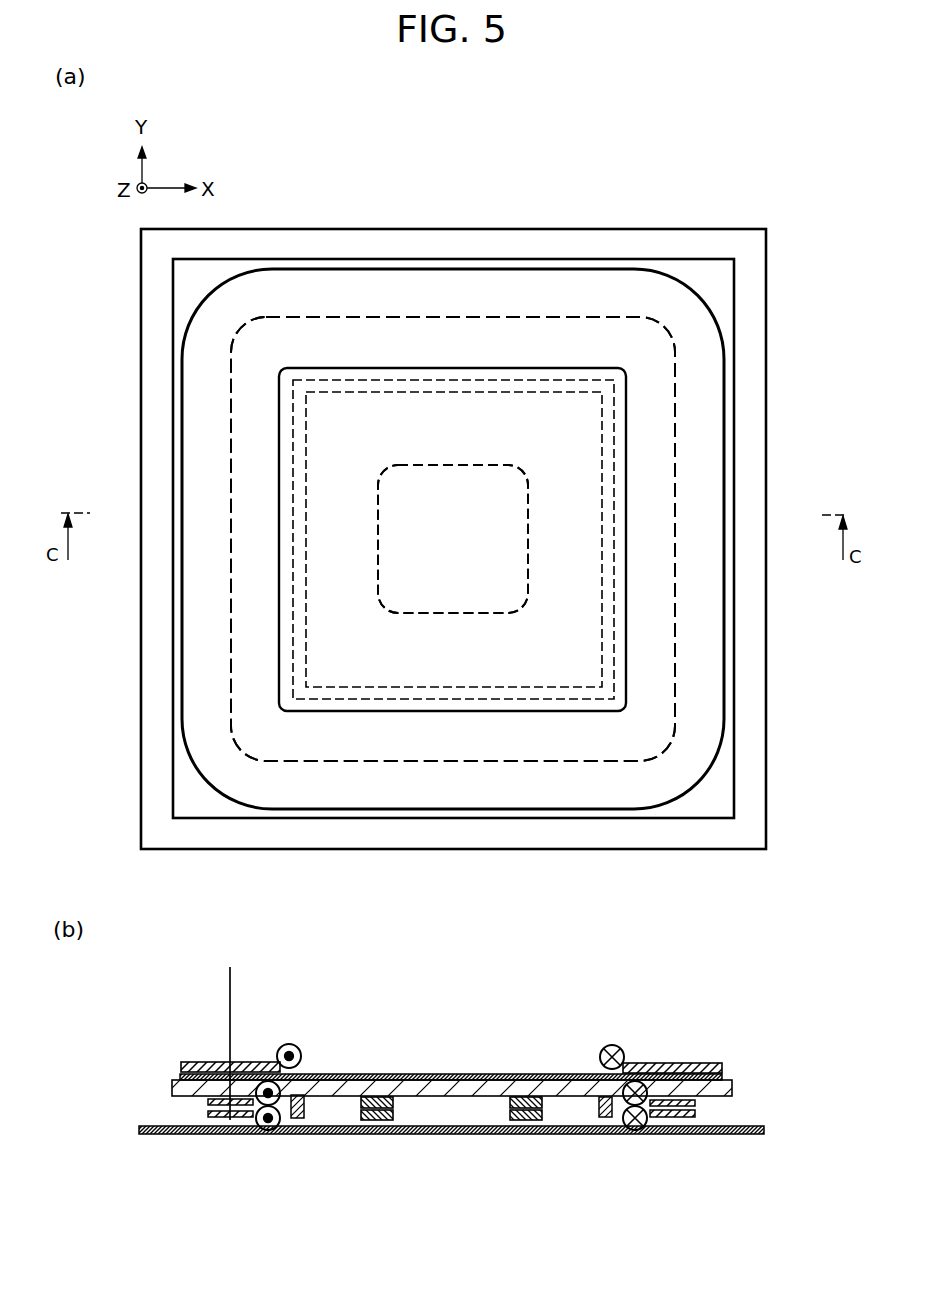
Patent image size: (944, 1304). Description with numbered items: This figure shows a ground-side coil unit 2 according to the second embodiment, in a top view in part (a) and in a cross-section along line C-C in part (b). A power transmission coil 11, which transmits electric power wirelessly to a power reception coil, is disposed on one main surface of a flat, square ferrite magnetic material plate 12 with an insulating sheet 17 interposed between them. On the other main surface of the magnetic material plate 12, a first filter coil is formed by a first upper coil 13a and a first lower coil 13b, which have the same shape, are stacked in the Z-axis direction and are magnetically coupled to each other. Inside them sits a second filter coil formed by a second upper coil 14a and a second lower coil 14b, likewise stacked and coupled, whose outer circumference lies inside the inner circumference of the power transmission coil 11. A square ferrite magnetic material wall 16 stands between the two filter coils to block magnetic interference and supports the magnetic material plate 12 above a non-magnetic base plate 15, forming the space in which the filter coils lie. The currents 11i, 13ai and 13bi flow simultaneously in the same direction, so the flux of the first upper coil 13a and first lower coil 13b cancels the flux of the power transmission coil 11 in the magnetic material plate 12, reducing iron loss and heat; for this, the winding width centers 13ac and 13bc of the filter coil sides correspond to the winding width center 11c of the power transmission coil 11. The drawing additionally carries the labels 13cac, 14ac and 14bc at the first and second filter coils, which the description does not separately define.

The ground-side coil unit 2 is at (681, 226).
The power transmission coil 11 is at (710, 688).
The winding width center of the power transmission coil 11c is at (229, 1010).
The current of the power transmission coil 11i is at (300, 1052).
The magnetic material plate 12 is at (727, 747).
The first upper coil 13a is at (208, 1102).
The first lower coil 13b is at (208, 1118).
The current of the first upper coil 13ai is at (254, 1068).
The current of the first lower coil 13bi is at (268, 1131).
The winding width center of the first upper coil 13ac is at (236, 1118).
The winding width center of the first lower coil 13bc is at (236, 1118).
The center of electrode pair 13cac is at (404, 762).
The second upper coil 14a is at (383, 1097).
The second lower coil 14b is at (376, 1120).
The center of first detection electrode 14ac is at (405, 614).
The center of second detection electrode 14bc is at (453, 539).
The base plate 15 is at (762, 795).
The magnetic material wall 16 is at (608, 574).
The insulating sheet 17 is at (466, 1075).